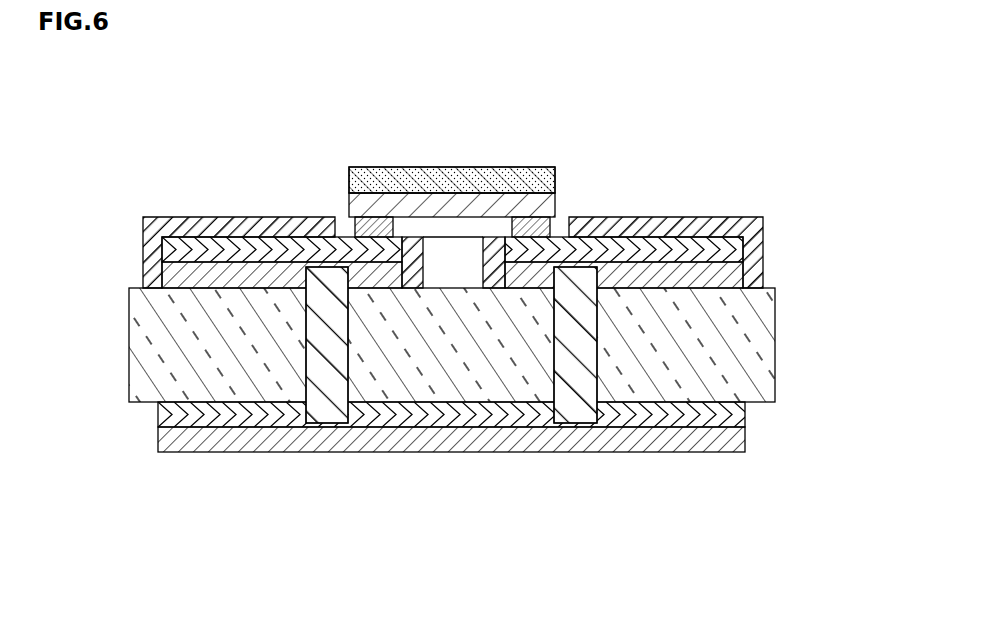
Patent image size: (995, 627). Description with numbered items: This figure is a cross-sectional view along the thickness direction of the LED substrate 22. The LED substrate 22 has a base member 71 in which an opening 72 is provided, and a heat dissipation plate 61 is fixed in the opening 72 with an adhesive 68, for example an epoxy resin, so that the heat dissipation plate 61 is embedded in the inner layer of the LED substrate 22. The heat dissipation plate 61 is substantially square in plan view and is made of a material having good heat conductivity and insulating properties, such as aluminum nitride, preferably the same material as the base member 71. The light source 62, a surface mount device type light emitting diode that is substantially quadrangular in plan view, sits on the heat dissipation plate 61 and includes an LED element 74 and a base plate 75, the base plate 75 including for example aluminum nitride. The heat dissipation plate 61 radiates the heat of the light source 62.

The LED substrate 22 is at (703, 452).
The heat dissipation plate 61 is at (405, 403).
The light source 62 is at (413, 149).
The adhesive 68 is at (572, 425).
The base member 71 is at (775, 345).
The opening 72 is at (600, 288).
The LED element 74 is at (370, 167).
The base plate 75 is at (348, 205).